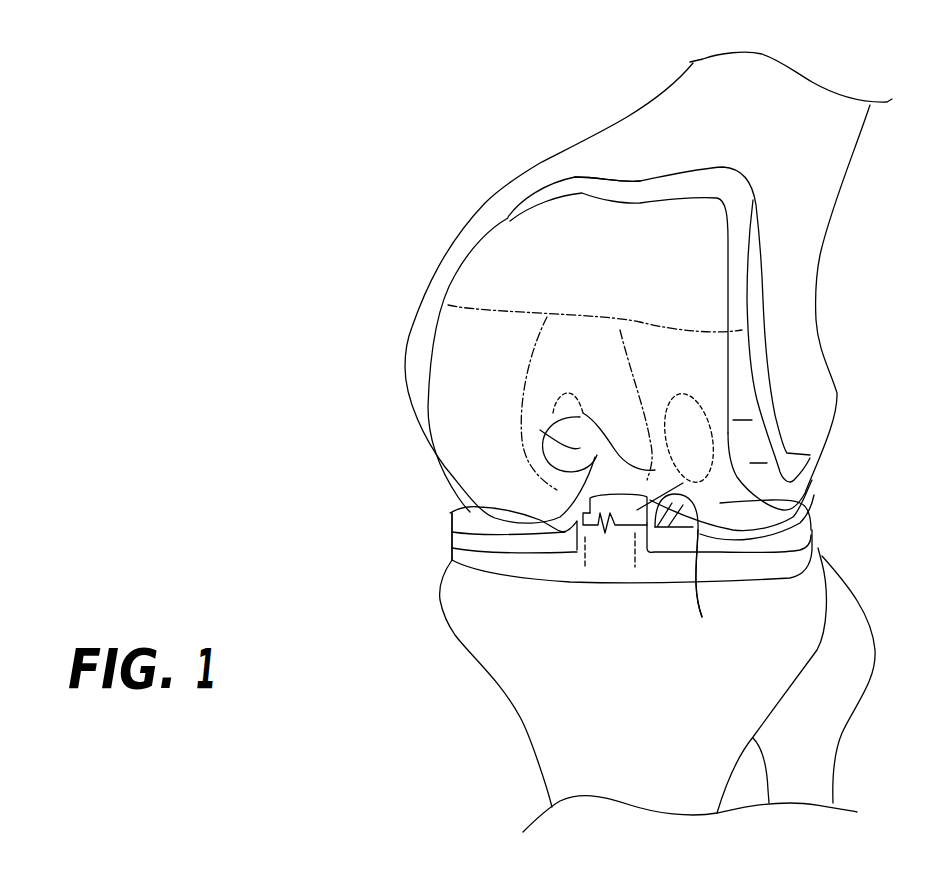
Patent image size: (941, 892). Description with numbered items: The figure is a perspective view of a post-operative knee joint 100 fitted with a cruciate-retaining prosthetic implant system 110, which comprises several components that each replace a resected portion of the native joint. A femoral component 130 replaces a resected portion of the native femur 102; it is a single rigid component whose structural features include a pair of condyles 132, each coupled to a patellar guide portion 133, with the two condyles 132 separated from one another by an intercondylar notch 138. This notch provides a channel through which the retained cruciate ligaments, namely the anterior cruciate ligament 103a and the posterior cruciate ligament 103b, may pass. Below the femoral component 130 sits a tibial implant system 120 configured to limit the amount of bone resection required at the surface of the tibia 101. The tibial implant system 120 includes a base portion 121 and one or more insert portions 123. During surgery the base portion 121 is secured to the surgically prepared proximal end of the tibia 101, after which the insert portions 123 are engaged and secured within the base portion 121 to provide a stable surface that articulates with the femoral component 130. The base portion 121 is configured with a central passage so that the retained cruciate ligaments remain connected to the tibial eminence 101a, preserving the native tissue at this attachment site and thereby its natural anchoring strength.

The knee joint 100 is at (178, 187).
The prosthetic implant system 110 is at (212, 342).
The femur 102 is at (660, 142).
The femoral component 130 is at (548, 193).
The patellar guide portion 133 is at (585, 316).
The intercondylar notch 138 is at (613, 430).
The anterior cruciate ligament (ACL) 103a is at (583, 490).
The posterior cruciate ligament (PCL) 103b is at (635, 440).
The condyles 132 is at (476, 483).
The insert portions 123 is at (453, 523).
The tibial implant system 120 is at (428, 544).
The base portion 121 is at (761, 560).
The tibia 101 is at (455, 600).
The tibial eminence 101a is at (702, 617).